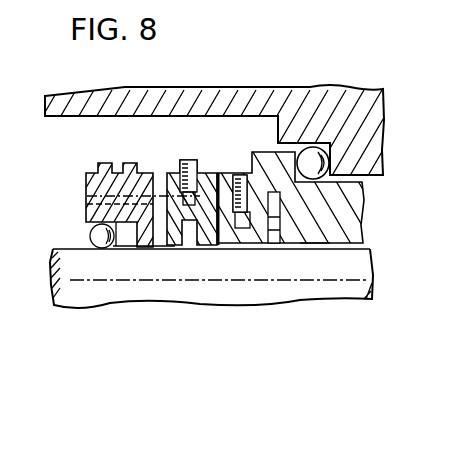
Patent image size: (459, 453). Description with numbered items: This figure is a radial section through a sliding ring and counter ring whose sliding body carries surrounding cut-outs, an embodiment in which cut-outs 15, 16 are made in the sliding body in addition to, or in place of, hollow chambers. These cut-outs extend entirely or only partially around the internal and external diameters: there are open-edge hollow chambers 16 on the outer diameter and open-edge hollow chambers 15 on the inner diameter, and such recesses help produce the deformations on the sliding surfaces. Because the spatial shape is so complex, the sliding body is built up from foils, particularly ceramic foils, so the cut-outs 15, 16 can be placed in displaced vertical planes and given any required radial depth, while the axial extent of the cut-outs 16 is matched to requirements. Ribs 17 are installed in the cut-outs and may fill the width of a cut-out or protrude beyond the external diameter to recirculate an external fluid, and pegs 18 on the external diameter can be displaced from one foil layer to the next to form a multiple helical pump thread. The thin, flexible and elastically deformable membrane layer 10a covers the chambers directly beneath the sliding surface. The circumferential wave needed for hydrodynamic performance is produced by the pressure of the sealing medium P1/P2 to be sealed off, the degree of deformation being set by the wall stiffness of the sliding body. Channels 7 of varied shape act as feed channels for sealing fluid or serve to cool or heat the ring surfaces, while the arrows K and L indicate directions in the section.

The channel 7 is at (125, 248).
The membrane layer 10a is at (233, 172).
The cut-out 15 is at (140, 240).
The cut-out 16 is at (162, 180).
The rib 17 is at (189, 160).
The peg 18 is at (128, 163).
The sealing medium pressure P1 is at (216, 195).
The sealing medium pressure P2 is at (316, 245).
The direction K is at (188, 38).
The direction L is at (187, 262).